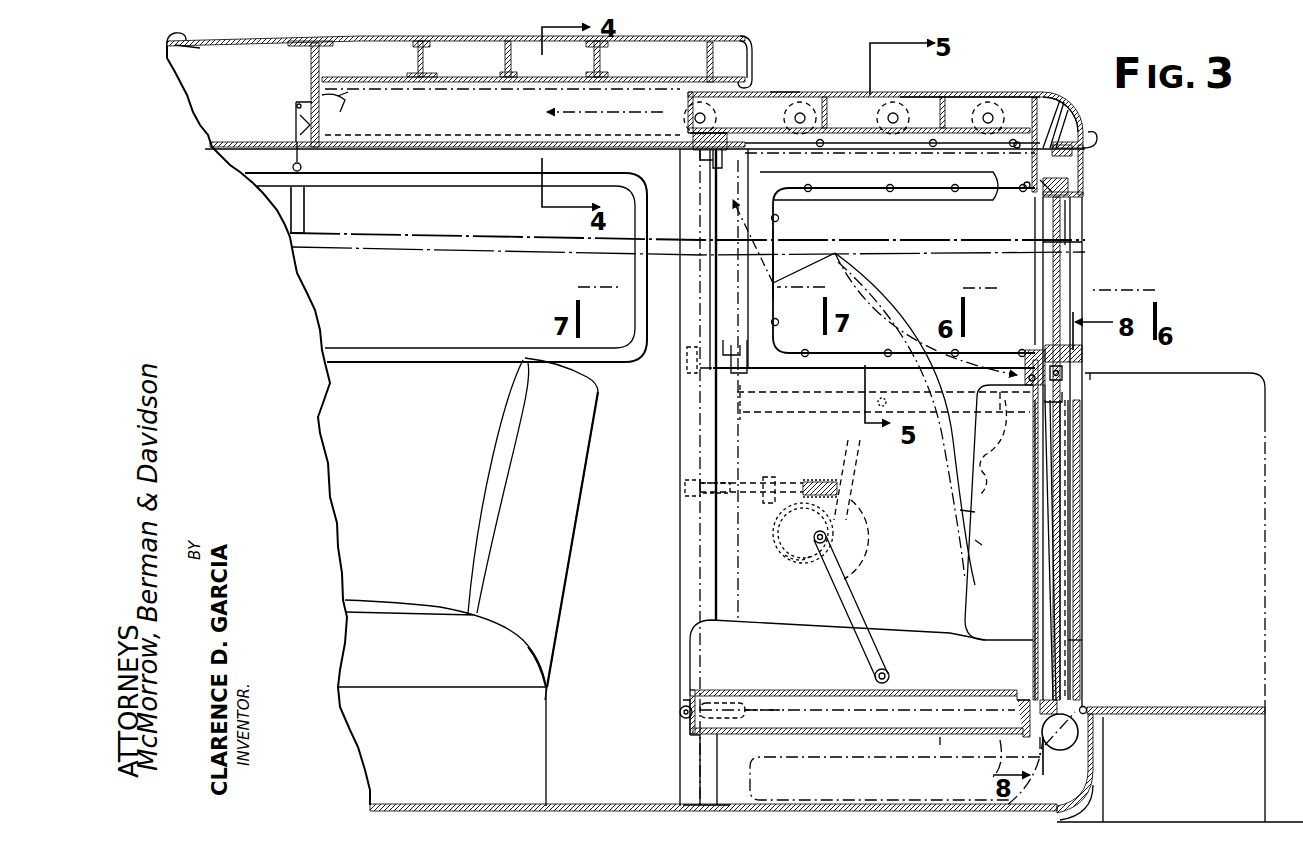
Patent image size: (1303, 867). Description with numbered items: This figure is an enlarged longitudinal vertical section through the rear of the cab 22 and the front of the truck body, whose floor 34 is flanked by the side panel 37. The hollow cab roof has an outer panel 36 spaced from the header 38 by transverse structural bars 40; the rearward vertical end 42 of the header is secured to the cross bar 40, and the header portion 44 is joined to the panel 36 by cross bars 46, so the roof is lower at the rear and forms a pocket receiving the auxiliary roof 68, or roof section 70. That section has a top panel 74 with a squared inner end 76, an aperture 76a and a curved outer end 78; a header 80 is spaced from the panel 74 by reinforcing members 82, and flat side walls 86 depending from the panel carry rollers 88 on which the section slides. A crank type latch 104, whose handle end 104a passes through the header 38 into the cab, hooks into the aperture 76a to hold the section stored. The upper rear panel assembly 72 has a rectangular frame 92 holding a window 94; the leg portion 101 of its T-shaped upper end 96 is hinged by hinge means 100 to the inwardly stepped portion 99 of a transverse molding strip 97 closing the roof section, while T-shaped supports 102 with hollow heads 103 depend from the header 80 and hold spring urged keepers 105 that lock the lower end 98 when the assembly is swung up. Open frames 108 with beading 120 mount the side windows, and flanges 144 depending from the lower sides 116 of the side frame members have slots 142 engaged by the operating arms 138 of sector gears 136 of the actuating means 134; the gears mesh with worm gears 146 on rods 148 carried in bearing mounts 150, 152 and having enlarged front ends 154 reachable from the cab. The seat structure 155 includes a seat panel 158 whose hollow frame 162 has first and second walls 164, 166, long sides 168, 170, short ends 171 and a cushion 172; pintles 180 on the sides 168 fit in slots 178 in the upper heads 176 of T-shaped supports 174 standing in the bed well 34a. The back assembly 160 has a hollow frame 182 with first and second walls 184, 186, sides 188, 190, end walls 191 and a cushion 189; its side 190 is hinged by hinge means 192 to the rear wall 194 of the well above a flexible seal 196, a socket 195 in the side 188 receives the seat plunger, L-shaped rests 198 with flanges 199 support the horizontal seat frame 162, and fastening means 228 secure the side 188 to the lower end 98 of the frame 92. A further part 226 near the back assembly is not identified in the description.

The cab 22 is at (167, 40).
The bed or floor 34 is at (1165, 707).
The bed well 34a is at (583, 806).
The outer panel 36 is at (712, 44).
The side panel 37 is at (1215, 395).
The header 38 is at (255, 150).
The transverse structural bar 40 is at (311, 67).
The rearward vertical end 42 is at (345, 100).
The header portion 44 is at (548, 82).
The cross bars 46 is at (594, 60).
The auxiliary roof 68 is at (967, 93).
The roof section 70 is at (1025, 95).
The upper rear panel assembly 72 is at (1088, 166).
The top panel 74 is at (918, 96).
The squared inner end 76 is at (688, 100).
The aperture 76a is at (683, 110).
The outer end 78 is at (1095, 134).
The header 80 is at (780, 86).
The reinforcing members 82 is at (826, 96).
The flat side walls 86 is at (770, 95).
The rollers 88 is at (893, 100).
The rectangular frame 92 is at (1078, 214).
The window or transparent panel 94 is at (1067, 243).
The upper end 96 is at (1090, 152).
The transverse molding strip 97 is at (1066, 118).
The lower end 98 is at (1062, 392).
The inwardly stepped inner portion 99 is at (1045, 148).
The hinge means 100 is at (1060, 170).
The leg portion 101 is at (1047, 183).
The T-shaped supports 102 is at (712, 133).
The hollow heads 103 is at (716, 166).
The crank type latch 104 is at (296, 120).
The handle end 104a is at (296, 172).
The spring urged keepers 105 is at (712, 154).
The open frames 108 is at (760, 385).
The lower sides 116 is at (797, 400).
The beading 120 is at (783, 230).
The actuating means 134 is at (818, 545).
The sector gears 136 is at (795, 560).
The operating arms 138 is at (868, 460).
The slots 142 is at (957, 400).
The flanges 144 is at (852, 395).
The worm gears 146 is at (820, 483).
The longitudinally extending rods 148 is at (784, 530).
The bearing mount 150 is at (768, 477).
The bearing mount 152 is at (703, 497).
The enlarged front ends 154 is at (690, 494).
The seat structure 155 is at (973, 512).
The seat panel 158 is at (874, 740).
The back assembly 160 is at (1090, 537).
The hollow frame 162 is at (818, 736).
The first wall 164 is at (900, 690).
The second wall 166 is at (937, 737).
The long side 168 is at (1017, 712).
The long side 170 is at (690, 722).
The short ends 171 is at (798, 698).
The cushion or pad 172 is at (890, 667).
The T-shaped supports 174 is at (713, 768).
The upper heads 176 is at (680, 714).
The slots 178 is at (748, 717).
The pintles 180 is at (682, 709).
The hollow frame 182 is at (1083, 613).
The first wall 184 is at (1035, 600).
The second wall 186 is at (1075, 645).
The side 188 is at (1083, 370).
The cushion 189 is at (980, 540).
The side 190 is at (1080, 735).
The end walls 191 is at (1050, 603).
The hinge means 192 is at (1088, 708).
The rear wall 194 is at (1095, 765).
The socket 195 is at (1064, 390).
The flexible seal 196 is at (1072, 800).
The rests 198 is at (1043, 740).
The flanges 199 is at (1000, 740).
The latch lever 226 is at (1010, 440).
The fastening means 228 is at (687, 355).